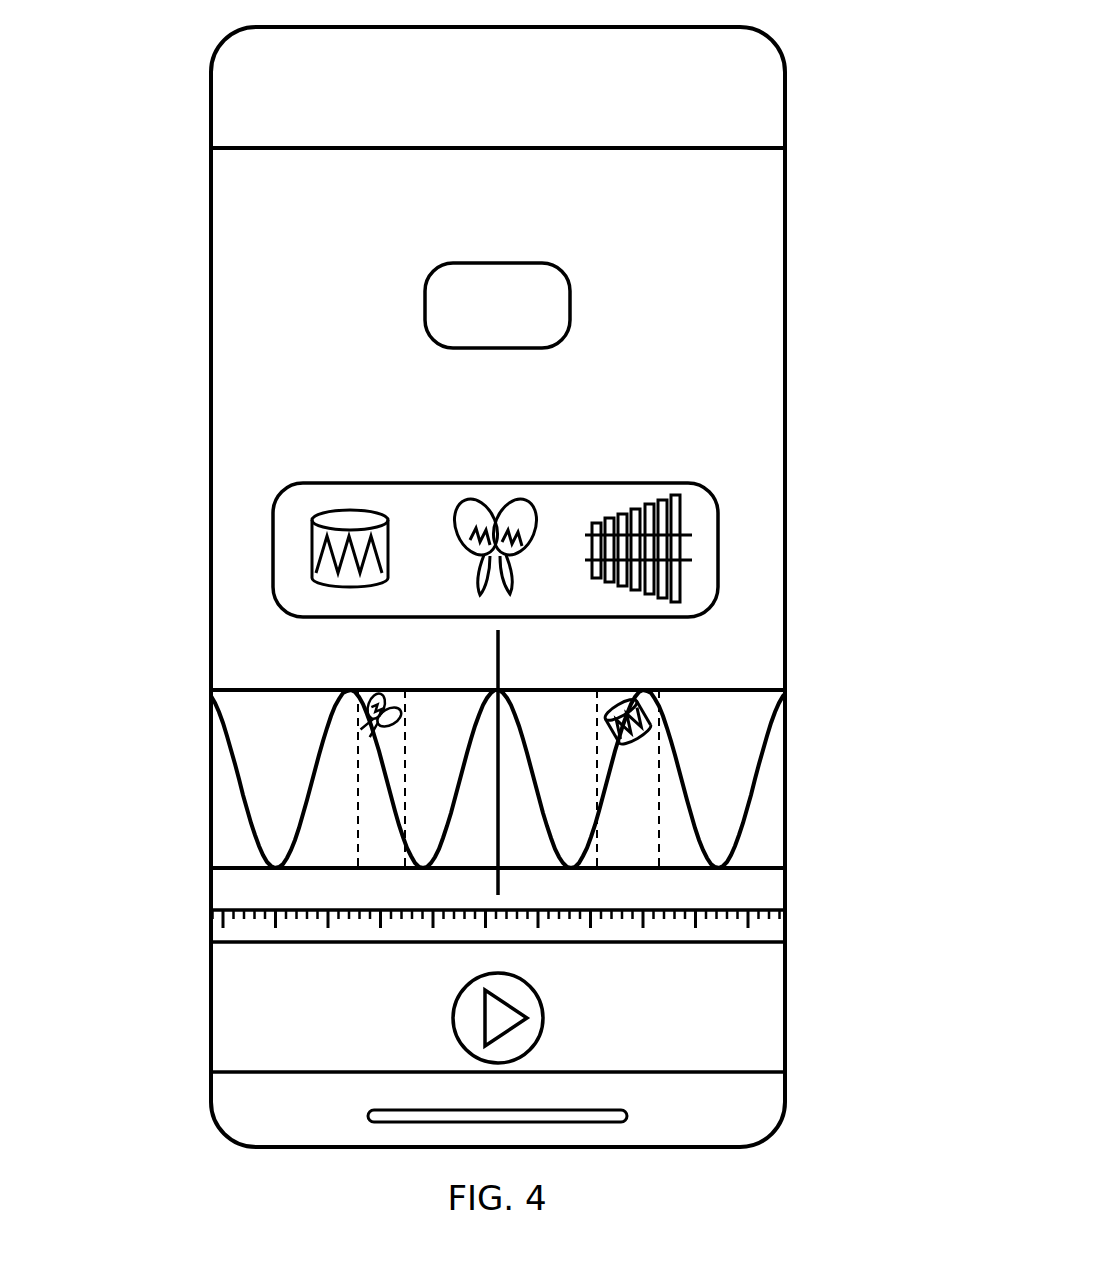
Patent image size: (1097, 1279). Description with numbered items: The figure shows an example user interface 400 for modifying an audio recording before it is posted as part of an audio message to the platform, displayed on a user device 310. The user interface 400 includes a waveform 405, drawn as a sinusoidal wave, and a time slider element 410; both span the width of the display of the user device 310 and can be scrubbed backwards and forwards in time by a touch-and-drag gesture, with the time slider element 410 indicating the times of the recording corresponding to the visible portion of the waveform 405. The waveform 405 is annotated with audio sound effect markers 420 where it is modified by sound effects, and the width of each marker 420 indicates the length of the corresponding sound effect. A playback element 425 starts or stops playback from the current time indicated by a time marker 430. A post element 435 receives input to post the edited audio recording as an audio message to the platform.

The user interface 400 is at (145, 83).
The user device 310 is at (786, 88).
The post button 435 is at (571, 300).
The waveform 405 is at (721, 533).
The audio sound effect markers 420 is at (352, 688).
The time marker 430 is at (500, 677).
The time slider element 410 is at (787, 915).
The playback element 425 is at (549, 1020).